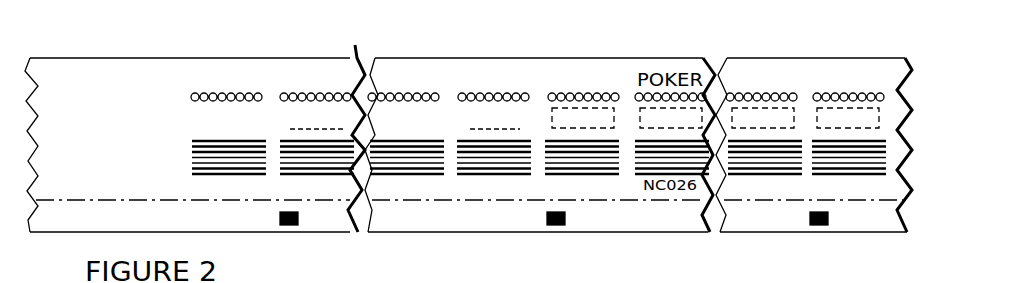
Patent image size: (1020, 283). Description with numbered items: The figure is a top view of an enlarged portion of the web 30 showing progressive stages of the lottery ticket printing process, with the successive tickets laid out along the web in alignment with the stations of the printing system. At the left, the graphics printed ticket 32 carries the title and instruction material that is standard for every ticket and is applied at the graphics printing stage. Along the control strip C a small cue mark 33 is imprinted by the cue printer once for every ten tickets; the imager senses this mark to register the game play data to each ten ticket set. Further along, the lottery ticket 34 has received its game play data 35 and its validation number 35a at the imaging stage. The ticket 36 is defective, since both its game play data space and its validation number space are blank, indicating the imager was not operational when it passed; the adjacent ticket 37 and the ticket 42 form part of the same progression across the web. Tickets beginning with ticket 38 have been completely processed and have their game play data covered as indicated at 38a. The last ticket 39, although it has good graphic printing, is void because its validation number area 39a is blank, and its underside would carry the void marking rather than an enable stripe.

The web 30 is at (97, 88).
The graphics printed ticket 32 is at (218, 63).
The cue mark 33 is at (279, 218).
The lottery ticket 34 is at (317, 63).
The game play data 35 is at (365, 129).
The validation number 35a is at (322, 198).
The defective ticket 36 is at (402, 63).
The fourth ticket portion 37 is at (482, 63).
The completely processed ticket 38 is at (577, 63).
The covered game play data 38a is at (613, 127).
The last ticket 39 is at (837, 63).
The validation number area 39a is at (858, 198).
The second ticket segment 42 is at (540, 170).
The control strip C is at (73, 218).